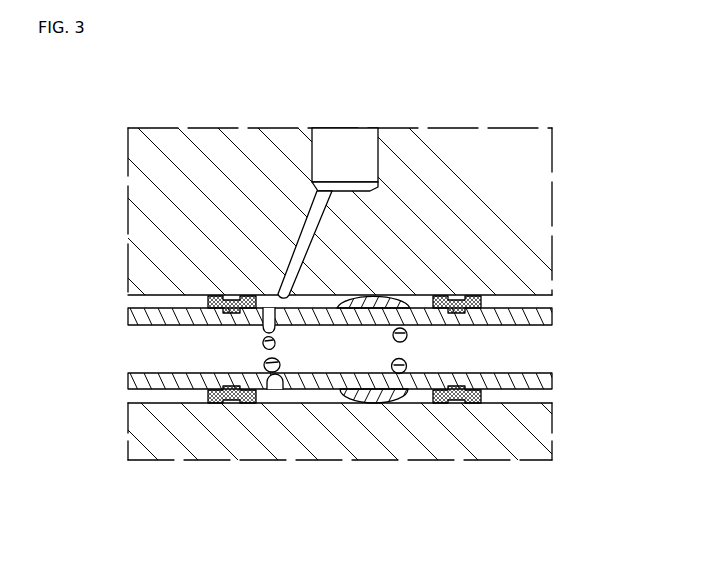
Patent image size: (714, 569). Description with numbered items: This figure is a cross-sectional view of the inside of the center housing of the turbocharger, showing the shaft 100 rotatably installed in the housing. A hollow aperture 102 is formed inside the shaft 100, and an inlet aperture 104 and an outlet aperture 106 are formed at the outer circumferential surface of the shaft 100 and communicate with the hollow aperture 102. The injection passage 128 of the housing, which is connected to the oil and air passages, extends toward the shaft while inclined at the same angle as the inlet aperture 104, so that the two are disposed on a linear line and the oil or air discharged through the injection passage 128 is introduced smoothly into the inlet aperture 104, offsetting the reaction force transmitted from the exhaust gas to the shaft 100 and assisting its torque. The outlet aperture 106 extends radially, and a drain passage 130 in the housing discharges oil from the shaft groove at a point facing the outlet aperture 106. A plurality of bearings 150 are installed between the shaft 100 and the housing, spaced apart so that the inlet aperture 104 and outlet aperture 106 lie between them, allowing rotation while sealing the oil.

The shaft 100 is at (538, 380).
The hollow aperture 102 is at (520, 352).
The inlet aperture 104 is at (262, 344).
The outlet aperture 106 is at (399, 373).
The injection passage 128 is at (296, 248).
The drain passage 130 is at (362, 402).
The bearings 150 is at (442, 296).